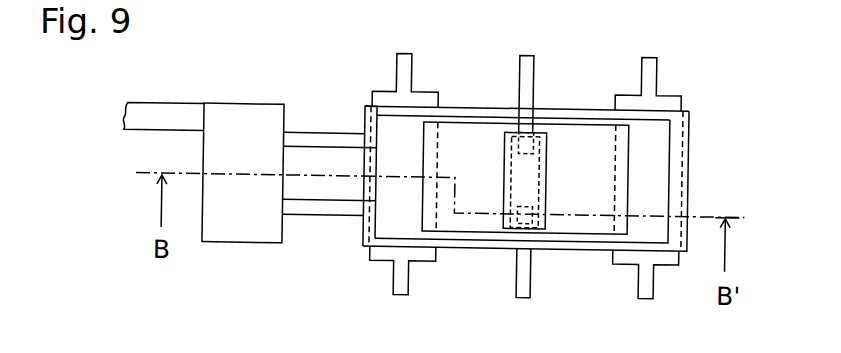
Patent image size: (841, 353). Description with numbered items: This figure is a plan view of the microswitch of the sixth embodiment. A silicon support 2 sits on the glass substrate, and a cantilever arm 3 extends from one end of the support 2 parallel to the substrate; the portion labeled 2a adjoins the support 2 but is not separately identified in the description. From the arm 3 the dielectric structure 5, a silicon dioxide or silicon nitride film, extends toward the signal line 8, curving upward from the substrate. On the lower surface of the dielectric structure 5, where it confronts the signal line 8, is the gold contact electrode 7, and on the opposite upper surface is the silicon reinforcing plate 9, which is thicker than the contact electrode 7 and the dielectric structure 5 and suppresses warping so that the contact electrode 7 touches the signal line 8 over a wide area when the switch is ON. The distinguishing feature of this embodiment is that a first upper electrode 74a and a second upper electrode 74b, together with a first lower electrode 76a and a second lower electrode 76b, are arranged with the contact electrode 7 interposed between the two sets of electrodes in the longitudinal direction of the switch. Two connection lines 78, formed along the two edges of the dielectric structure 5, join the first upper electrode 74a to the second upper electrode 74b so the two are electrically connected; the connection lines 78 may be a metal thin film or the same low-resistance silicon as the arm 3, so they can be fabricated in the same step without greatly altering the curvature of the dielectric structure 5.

The shaft 2a is at (159, 105).
The support 2 is at (241, 104).
The arm 3 is at (322, 133).
The dielectric structure 5 is at (484, 132).
The contact electrode 7 is at (532, 176).
The signal line 8 is at (533, 88).
The reinforcing plate 9 is at (550, 206).
The first upper electrode 74a is at (387, 128).
The second upper electrode 74b is at (654, 136).
The first lower electrode 76a is at (410, 88).
The second lower electrode 76b is at (655, 88).
The connection line 78 is at (581, 117).